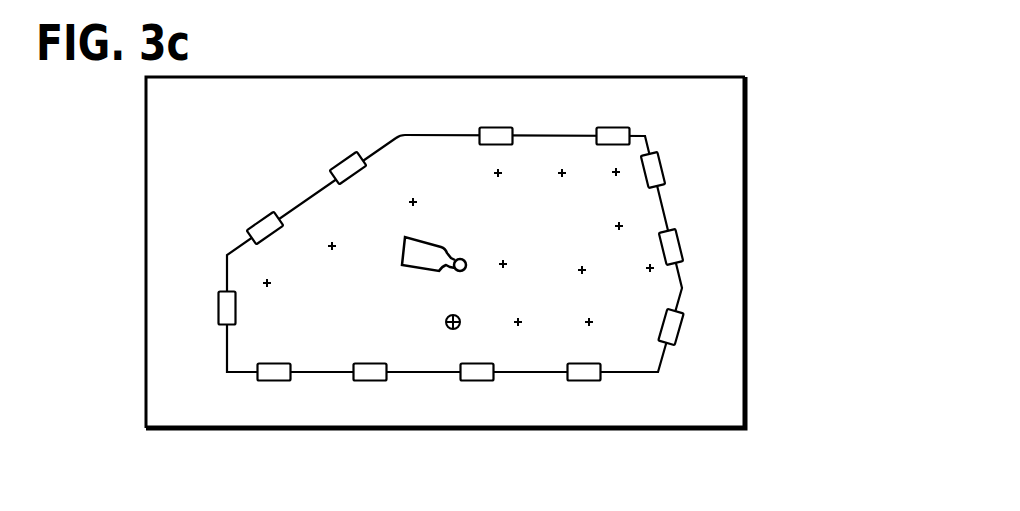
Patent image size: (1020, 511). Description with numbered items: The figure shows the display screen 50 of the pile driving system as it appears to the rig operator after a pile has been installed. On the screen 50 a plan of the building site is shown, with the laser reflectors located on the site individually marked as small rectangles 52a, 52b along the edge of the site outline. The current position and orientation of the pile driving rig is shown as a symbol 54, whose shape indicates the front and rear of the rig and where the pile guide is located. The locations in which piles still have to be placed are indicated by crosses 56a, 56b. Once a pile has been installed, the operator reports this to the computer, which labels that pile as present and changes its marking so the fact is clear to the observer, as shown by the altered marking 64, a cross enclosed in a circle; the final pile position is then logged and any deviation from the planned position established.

The screen 50 is at (728, 256).
The laser reflector 52a is at (277, 374).
The laser reflector 52b is at (370, 373).
The symbol 54 is at (415, 258).
The cross 56a is at (518, 328).
The cross 56b is at (590, 328).
The marking for installed pile 64 is at (453, 330).